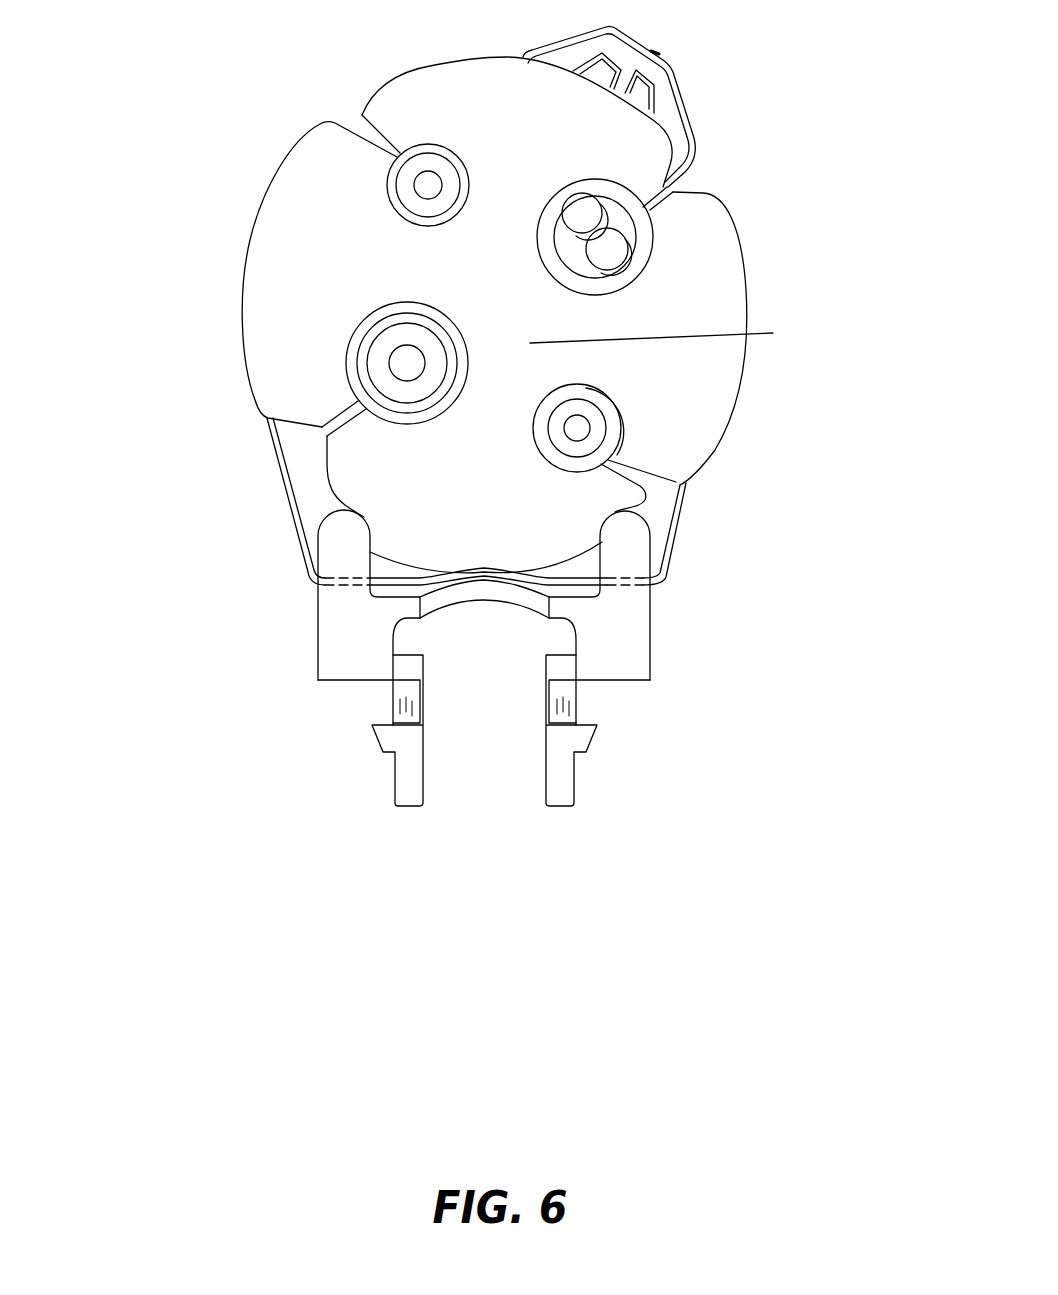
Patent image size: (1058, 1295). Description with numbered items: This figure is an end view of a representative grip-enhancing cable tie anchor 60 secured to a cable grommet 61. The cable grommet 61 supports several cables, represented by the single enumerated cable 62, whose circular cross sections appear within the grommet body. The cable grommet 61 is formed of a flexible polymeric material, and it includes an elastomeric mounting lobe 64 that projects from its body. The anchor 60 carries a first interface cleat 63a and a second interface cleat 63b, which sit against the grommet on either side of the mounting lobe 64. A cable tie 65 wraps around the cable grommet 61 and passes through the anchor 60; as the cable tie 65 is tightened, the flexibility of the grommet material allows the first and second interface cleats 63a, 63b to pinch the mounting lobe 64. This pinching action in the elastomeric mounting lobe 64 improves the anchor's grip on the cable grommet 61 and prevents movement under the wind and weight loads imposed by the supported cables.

The grip-enhancing cable tie anchor 60 is at (472, 842).
The cable grommet 61 is at (775, 231).
The cable 62 is at (365, 200).
The first interface cleat 63a is at (337, 540).
The second interface cleat 63b is at (632, 540).
The mounting lobe 64 is at (480, 526).
The cable tie 65 is at (253, 489).